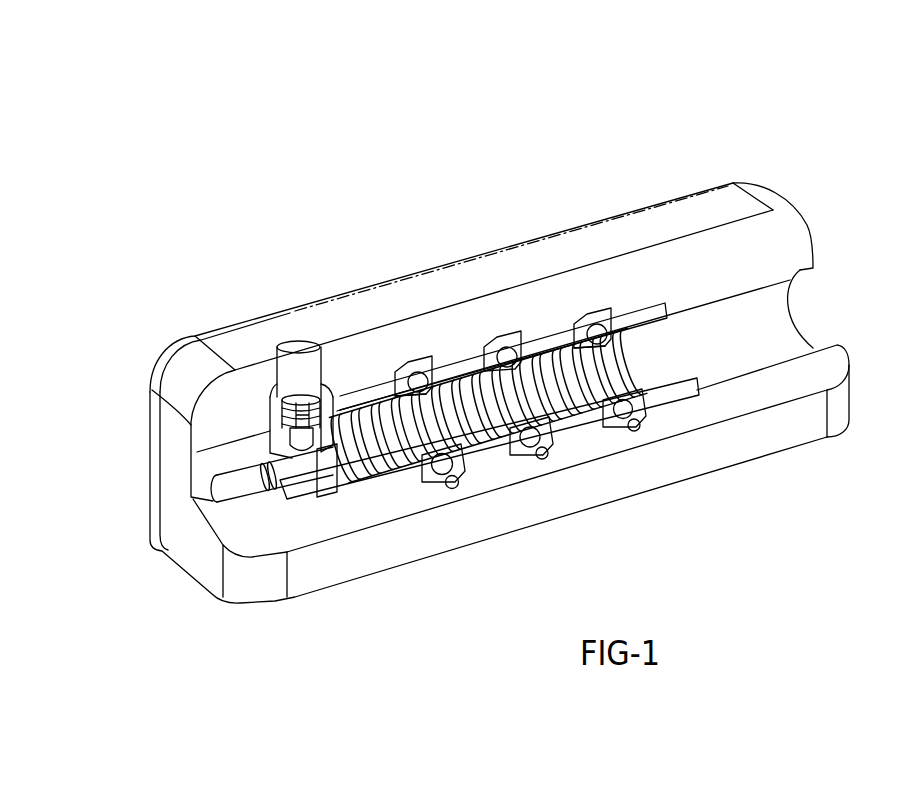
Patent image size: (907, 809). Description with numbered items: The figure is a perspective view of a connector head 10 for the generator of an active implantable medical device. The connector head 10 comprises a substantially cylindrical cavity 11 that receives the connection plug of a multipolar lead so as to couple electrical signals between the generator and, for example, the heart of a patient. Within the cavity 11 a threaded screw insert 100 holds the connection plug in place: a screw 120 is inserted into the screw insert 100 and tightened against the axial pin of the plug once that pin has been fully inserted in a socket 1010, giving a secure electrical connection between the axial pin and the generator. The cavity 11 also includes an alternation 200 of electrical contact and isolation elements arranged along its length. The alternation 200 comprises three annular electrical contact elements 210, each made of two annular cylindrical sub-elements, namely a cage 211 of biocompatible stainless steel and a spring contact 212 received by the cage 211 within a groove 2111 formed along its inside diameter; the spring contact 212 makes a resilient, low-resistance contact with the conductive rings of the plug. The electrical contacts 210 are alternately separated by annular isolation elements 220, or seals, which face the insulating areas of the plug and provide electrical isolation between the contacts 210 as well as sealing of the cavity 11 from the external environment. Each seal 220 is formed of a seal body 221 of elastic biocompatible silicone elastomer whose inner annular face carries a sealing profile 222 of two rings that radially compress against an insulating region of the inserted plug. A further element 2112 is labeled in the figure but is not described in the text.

The connector head 10 is at (597, 170).
The cavity 11 is at (787, 304).
The screw insert 100 is at (262, 443).
The screw 120 is at (298, 388).
The socket 1010 is at (305, 468).
The alternation 200 is at (547, 336).
The electrical contact element 210 is at (442, 487).
The isolation element 220 is at (401, 503).
The cage 211 is at (405, 372).
The spring contact 212 is at (432, 364).
The groove 2111 is at (416, 372).
The ball 2112 is at (500, 346).
The seal body 221 is at (633, 318).
The sealing profile 222 is at (664, 311).